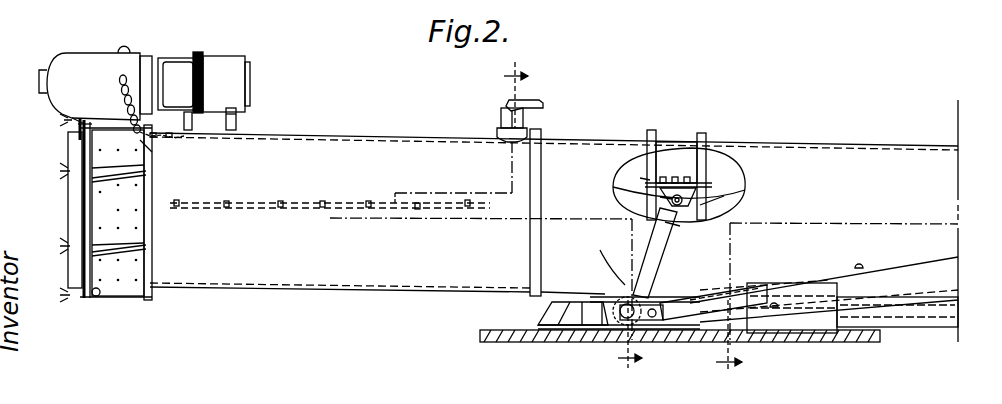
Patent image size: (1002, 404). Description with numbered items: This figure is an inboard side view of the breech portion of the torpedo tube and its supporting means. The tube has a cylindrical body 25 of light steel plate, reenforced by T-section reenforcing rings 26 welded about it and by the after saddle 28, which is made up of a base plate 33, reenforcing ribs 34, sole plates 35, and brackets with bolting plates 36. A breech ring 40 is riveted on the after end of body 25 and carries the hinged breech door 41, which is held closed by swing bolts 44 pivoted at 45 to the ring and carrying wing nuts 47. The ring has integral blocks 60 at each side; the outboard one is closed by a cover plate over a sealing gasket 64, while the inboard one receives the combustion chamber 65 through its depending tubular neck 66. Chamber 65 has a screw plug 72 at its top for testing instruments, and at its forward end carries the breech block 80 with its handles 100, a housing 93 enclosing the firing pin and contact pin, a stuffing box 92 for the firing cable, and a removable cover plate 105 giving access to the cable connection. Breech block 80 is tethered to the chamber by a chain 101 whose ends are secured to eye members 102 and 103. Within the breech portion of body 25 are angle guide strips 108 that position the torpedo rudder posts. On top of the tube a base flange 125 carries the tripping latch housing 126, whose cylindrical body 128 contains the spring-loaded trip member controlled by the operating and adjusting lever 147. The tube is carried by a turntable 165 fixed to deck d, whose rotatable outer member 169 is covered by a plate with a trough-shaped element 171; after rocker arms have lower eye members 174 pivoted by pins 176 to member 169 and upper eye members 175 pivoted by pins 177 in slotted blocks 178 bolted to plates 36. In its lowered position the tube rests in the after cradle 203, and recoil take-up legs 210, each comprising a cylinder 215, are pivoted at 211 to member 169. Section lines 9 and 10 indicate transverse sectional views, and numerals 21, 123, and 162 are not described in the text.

The section line 9- 9 is at (573, 222).
The section line 10- 10 is at (729, 345).
The motor end cap 21 is at (38, 82).
The cylindrical body 25 is at (822, 152).
The reenforcing rings 26 is at (542, 132).
The after saddle 28 is at (663, 128).
The base plate 33 is at (680, 144).
The reenforcing ribs 34 is at (702, 146).
The sole plates 35 is at (730, 178).
The bolting plates 36 is at (694, 186).
The breech ring 40 is at (132, 268).
The breech door 41 is at (72, 203).
The swing bolts 44 is at (80, 128).
The pivot 45 is at (104, 178).
The wing nuts 47 is at (62, 118).
The block 60 is at (152, 150).
The sealing gasket 64 is at (80, 120).
The combustion chamber 65 is at (66, 58).
The tubular neck 66 is at (152, 105).
The screw plug 72 is at (122, 46).
The breech block 80 is at (200, 70).
The stuffing box 92 is at (236, 118).
The housing 93 is at (226, 88).
The handles 100 is at (178, 62).
The chain 101 is at (146, 138).
The eye member 102 is at (120, 80).
The eye member 103 is at (192, 126).
The cover plate 105 is at (248, 74).
The angle guide strips 108 is at (325, 212).
The arm 123 is at (652, 262).
The base flange 125 is at (497, 131).
The housing 126 is at (494, 110).
The body 128 is at (530, 110).
The operating and adjusting lever 147 is at (535, 92).
The tube 162 is at (904, 323).
The turntable 165 is at (538, 314).
The outer member 169 is at (586, 322).
The trough-shaped element 171 is at (604, 298).
The eye members 174 is at (627, 290).
The eye members 175 is at (724, 196).
The pins 176 is at (646, 297).
The pins 177 is at (660, 197).
The slotted blocks 178 is at (642, 178).
The after cradle 203 is at (764, 329).
The recoil take-up legs 210 is at (898, 266).
The pivot 211 is at (653, 318).
The cylinder 215 is at (838, 276).
The deck d is at (828, 334).